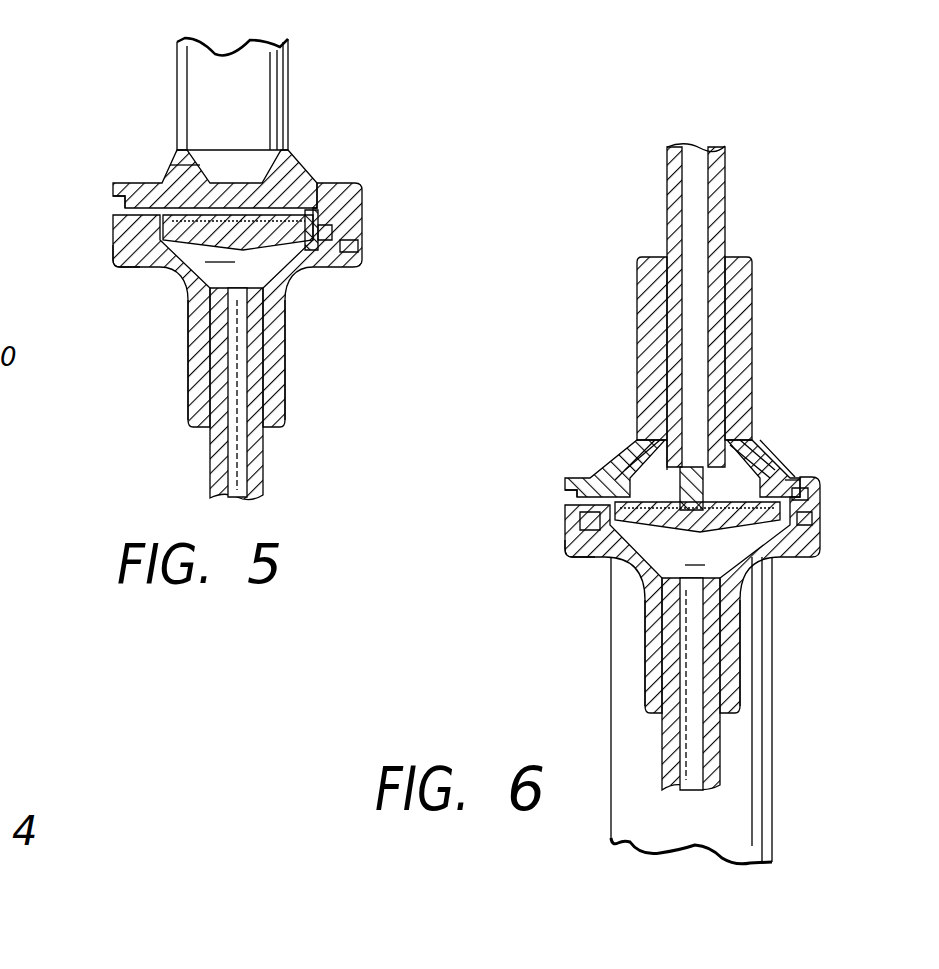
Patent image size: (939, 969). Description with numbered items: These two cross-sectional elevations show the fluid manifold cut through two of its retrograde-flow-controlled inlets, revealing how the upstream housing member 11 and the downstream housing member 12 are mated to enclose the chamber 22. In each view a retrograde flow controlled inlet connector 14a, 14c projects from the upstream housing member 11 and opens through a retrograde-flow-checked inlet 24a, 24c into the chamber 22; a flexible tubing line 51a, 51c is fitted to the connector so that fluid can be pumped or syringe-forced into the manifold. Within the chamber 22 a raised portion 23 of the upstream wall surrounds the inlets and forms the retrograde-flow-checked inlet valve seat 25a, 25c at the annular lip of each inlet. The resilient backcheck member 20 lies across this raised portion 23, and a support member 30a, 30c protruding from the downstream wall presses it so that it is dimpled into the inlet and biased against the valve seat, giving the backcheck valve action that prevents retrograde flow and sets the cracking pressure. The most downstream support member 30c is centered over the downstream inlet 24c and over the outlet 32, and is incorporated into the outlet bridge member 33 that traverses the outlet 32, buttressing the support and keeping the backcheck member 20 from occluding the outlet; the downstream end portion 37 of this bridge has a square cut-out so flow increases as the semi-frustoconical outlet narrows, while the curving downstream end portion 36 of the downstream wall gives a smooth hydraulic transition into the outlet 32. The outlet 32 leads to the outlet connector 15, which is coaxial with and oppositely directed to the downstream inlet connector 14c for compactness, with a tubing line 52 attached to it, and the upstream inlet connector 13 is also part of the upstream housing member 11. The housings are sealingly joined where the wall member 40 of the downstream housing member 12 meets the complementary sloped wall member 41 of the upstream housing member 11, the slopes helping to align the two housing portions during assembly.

In FIG. 5, the upstream housing member 11 is at (330, 278).
In FIG. 6, the upstream housing member 11 is at (822, 568).
In FIG. 5, the downstream housing member 12 is at (290, 150).
In FIG. 6, the downstream housing member 12 is at (625, 447).
In FIG. 6, the upstream inlet connector 13 is at (740, 816).
In FIG. 5, the retrograde flow controlled inlet connector 14a is at (285, 385).
In FIG. 6, the retrograde flow controlled inlet connector 14c is at (650, 665).
In FIG. 5, the outlet connector 15 is at (274, 80).
In FIG. 6, the outlet connector 15 is at (752, 312).
In FIG. 5, the resilient backcheck member 20 is at (295, 200).
In FIG. 6, the resilient backcheck member 20 is at (630, 480).
In FIG. 5, the chamber 22 is at (345, 250).
In FIG. 6, the chamber 22 is at (818, 512).
In FIG. 5, the raised portion 23 is at (118, 260).
In FIG. 6, the raised portion 23 is at (590, 553).
In FIG. 5, the retrograde-flow-checked inlet 24a is at (192, 278).
In FIG. 6, the retrograde-flow-checked inlet 24c is at (718, 582).
In FIG. 5, the retrograde-flow-checked inlet valve seat 25a is at (120, 187).
In FIG. 6, the retrograde-flow-checked inlet valve seat 25c is at (572, 487).
In FIG. 5, the support member 30a is at (195, 165).
In FIG. 6, the support member 30c is at (760, 440).
In FIG. 6, the outlet 32 is at (640, 450).
In FIG. 6, the outlet bridge member 33 is at (762, 428).
In FIG. 6, the downstream end portion 36 is at (790, 472).
In FIG. 6, the downstream end portion 37 is at (655, 430).
In FIG. 5, the wall member 40 is at (318, 222).
In FIG. 6, the wall member 40 is at (820, 496).
In FIG. 5, the wall member 41 is at (335, 240).
In FIG. 6, the wall member 41 is at (572, 521).
In FIG. 5, the flexible tubing line 51a is at (212, 462).
In FIG. 6, the flexible tubing line 51c is at (720, 757).
In FIG. 6, the tubing line 52 is at (726, 190).